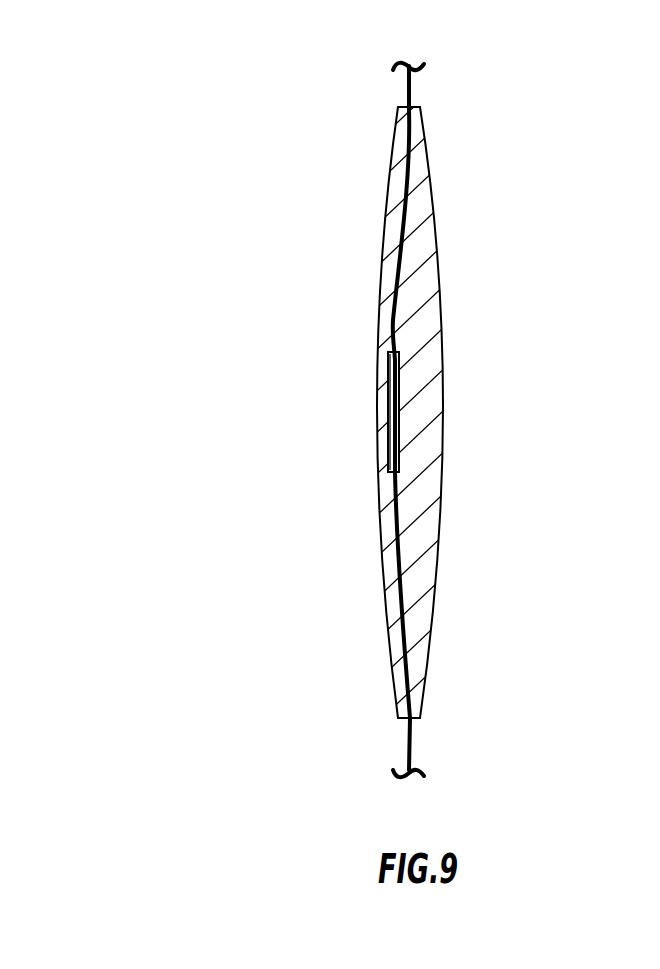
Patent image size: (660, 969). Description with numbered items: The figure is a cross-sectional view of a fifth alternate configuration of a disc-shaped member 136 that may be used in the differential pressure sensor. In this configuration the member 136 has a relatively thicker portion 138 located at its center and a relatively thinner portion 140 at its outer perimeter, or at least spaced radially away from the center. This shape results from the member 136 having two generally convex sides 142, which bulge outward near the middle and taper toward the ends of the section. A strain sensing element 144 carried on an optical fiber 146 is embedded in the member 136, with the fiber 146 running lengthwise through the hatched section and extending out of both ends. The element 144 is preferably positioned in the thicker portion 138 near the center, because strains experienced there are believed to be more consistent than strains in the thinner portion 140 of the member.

The disc-shaped member 136 is at (432, 200).
The thicker portion 138 is at (427, 398).
The thinner portion 140 is at (417, 660).
The convex sides 142 is at (387, 440).
The strain sensing element 144 is at (387, 403).
The optical fiber 146 is at (407, 743).